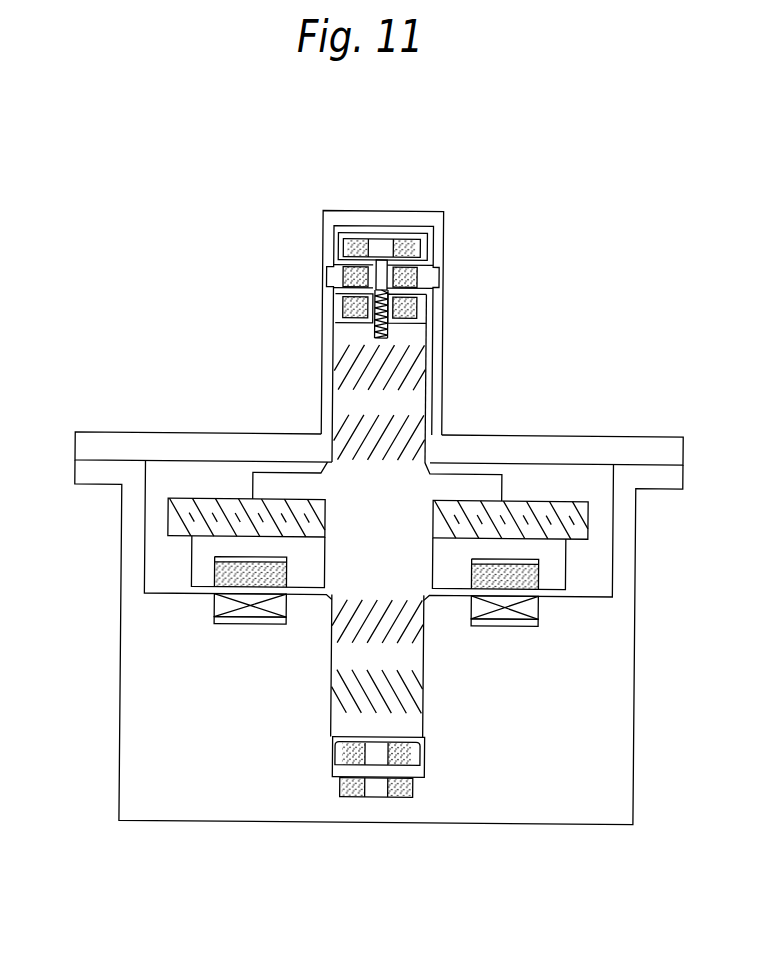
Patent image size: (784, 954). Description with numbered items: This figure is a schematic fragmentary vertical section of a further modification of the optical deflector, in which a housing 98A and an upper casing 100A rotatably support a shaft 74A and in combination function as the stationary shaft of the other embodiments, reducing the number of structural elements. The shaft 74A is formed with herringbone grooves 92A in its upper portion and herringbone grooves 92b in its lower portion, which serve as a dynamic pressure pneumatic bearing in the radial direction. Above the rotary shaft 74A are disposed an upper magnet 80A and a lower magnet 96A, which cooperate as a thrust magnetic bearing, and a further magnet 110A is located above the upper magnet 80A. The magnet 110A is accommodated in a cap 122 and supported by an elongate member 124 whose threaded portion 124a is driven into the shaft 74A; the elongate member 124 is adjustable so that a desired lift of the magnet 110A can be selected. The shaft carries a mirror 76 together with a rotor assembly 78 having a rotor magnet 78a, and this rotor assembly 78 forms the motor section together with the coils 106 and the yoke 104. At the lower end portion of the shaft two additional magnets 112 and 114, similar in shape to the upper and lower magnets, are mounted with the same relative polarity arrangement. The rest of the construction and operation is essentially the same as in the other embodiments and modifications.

The cap 122 is at (405, 222).
The elongate member 124 is at (374, 264).
The threaded portion 124a is at (370, 337).
The magnet 110A is at (412, 250).
The upper magnet 80A is at (402, 282).
The lower magnet 96A is at (411, 311).
The shaft 74A is at (418, 482).
The herringbone groove 92A is at (370, 429).
The upper casing 100A is at (155, 437).
The mirror 76 is at (177, 519).
The rotor assembly 78 is at (210, 551).
The rotor magnet 78a is at (217, 577).
The coils 106 is at (532, 609).
The yoke 104 is at (540, 624).
The herringbone groove 92b is at (332, 697).
The housing 98A is at (122, 792).
The magnet 112 is at (352, 758).
The magnet 114 is at (402, 786).